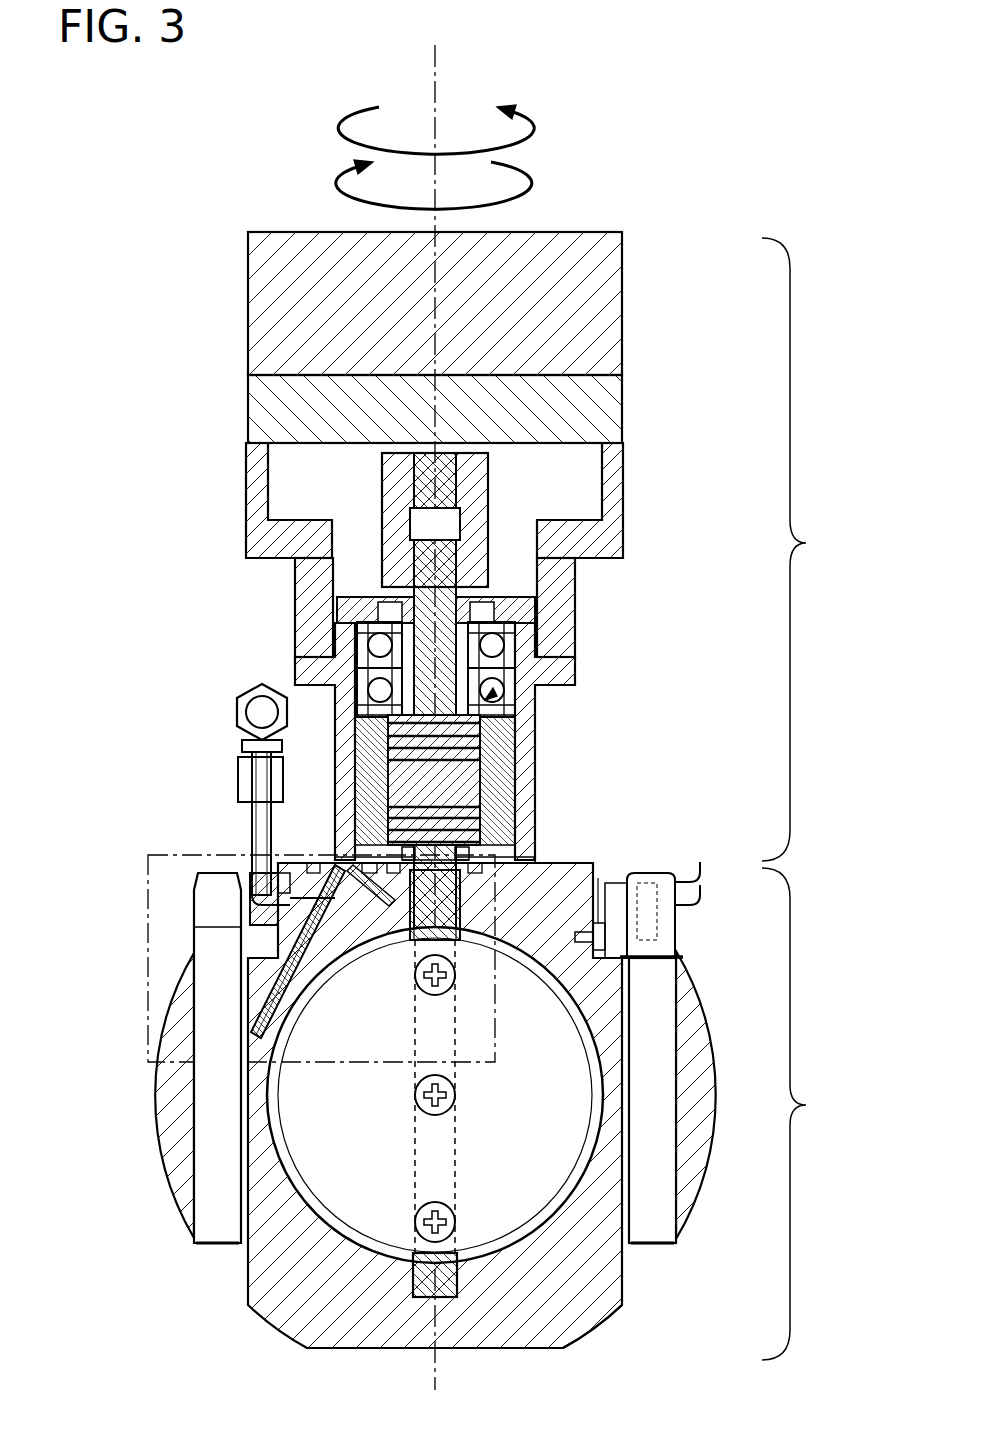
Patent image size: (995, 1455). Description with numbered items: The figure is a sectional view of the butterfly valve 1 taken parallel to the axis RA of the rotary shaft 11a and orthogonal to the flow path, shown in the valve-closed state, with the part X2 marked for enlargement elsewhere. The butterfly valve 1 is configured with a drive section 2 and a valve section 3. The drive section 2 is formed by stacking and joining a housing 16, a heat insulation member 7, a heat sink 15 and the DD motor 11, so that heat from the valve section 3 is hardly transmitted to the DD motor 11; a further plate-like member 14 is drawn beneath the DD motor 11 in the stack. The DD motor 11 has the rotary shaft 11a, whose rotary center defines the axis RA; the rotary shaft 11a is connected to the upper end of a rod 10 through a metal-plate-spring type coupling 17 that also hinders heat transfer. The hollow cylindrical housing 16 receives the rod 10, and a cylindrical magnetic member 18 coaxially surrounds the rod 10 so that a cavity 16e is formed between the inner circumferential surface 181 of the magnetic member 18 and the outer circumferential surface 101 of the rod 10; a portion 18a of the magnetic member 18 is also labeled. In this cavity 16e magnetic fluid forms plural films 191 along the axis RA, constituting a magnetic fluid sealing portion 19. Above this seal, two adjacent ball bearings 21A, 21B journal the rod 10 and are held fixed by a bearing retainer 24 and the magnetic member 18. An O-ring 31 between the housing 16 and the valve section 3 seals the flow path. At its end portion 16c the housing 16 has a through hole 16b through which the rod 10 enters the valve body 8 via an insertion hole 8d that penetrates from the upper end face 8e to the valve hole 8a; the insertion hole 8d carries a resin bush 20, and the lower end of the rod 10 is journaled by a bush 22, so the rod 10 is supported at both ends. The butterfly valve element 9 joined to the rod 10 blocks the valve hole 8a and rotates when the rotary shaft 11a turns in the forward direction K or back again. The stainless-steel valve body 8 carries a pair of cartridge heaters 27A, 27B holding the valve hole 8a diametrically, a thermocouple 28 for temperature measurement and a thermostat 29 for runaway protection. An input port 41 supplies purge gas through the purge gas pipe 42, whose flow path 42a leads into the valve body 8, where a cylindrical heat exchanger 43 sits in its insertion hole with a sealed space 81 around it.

The butterfly valve 1 is at (190, 165).
The drive section 2 is at (797, 549).
The valve section 3 is at (797, 1114).
The heat insulation member 7 is at (300, 580).
The valve body 8 is at (612, 870).
The valve hole 8a is at (585, 1158).
The insertion hole 8d is at (410, 882).
The upper end face 8e is at (538, 866).
The butterfly valve element 9 is at (352, 1195).
The rod 10 is at (420, 650).
The DD motor 11 is at (262, 300).
The rotary shaft 11a is at (423, 482).
The table plate 14 is at (266, 420).
The heat sink 15 is at (263, 540).
The housing 16 is at (342, 700).
The through hole 16b is at (560, 940).
The end portion 16c is at (352, 965).
The cavity 16e is at (515, 722).
The coupling 17 is at (387, 507).
The magnetic member 18 is at (482, 738).
The rotor magnet 18a is at (490, 770).
The inner circumferential surface 181 is at (477, 765).
The magnetic fluid sealing portion 19 is at (374, 798).
The films 191 is at (388, 812).
The bush 20 is at (452, 882).
The ball bearing 21A is at (555, 640).
The ball bearing 21B is at (555, 690).
The bush 22 is at (318, 1346).
The bearing retainer 24 is at (560, 603).
The heater 27A is at (207, 1192).
The heater 27B is at (655, 1138).
The thermocouple 28 is at (622, 942).
The thermostat 29 is at (640, 912).
The O-ring 31 is at (502, 822).
The input port 41 is at (240, 712).
The purge gas pipe 42 is at (254, 825).
The flow path 42a is at (240, 780).
The heat exchanger 43 is at (282, 940).
The space 81 is at (266, 1002).
The outer circumferential surface 101 is at (478, 805).
The part X2 is at (163, 855).
The axis RA is at (434, 70).
The forward direction K is at (530, 125).